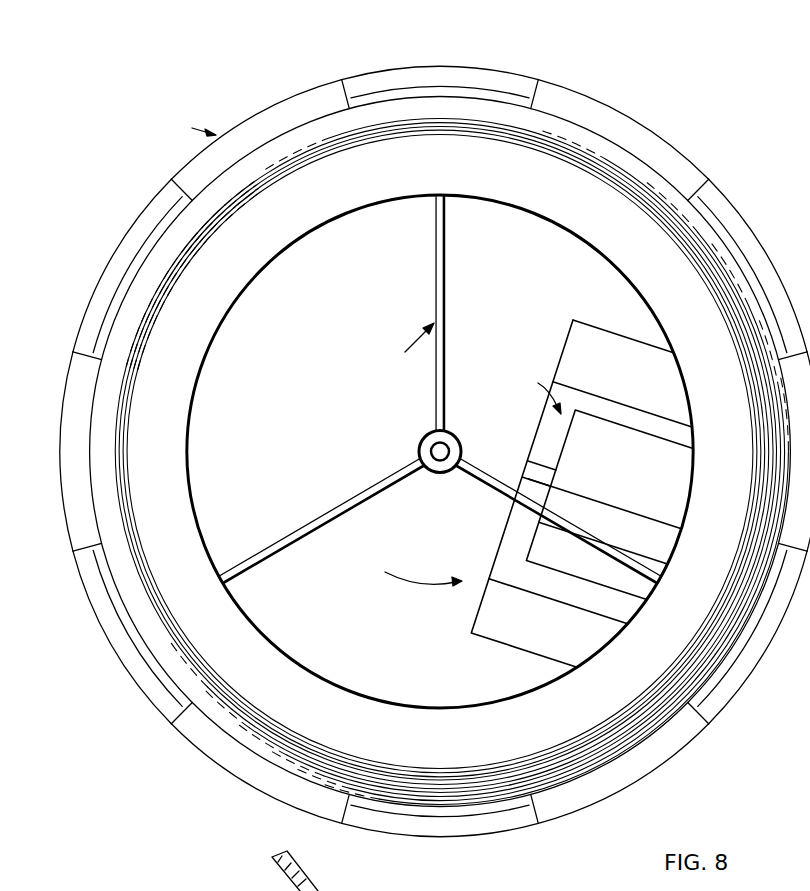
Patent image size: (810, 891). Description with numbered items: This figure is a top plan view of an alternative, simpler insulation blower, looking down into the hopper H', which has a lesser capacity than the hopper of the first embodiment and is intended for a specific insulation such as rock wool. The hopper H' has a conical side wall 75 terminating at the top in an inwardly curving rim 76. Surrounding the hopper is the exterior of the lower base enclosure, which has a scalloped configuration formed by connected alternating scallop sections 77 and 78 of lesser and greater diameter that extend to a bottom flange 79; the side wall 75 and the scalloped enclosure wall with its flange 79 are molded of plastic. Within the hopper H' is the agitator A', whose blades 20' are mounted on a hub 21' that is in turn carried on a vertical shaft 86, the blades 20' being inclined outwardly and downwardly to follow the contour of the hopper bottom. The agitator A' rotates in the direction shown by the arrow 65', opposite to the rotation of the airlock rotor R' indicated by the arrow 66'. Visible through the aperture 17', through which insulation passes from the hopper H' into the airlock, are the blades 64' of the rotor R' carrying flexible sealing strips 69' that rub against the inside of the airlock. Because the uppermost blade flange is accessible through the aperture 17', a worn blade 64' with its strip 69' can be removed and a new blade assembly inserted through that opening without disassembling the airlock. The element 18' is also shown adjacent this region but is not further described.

The bottom flange 79 is at (440, 63).
The scallop section of greater diameter 78 is at (632, 116).
The scallop section of lesser diameter 77 is at (528, 92).
The conical side wall 75 is at (305, 172).
The hopper H' is at (194, 128).
The inwardly curving rim 76 is at (334, 219).
The blades 20' is at (440, 390).
The agitator A' is at (408, 345).
The hub 21' is at (465, 441).
The vertical shaft 86 is at (436, 446).
The aperture 17' is at (622, 362).
The carrier block 18' is at (524, 492).
The flexible sealing strips 69' is at (572, 512).
The arrow 66' is at (609, 504).
The blades 64' is at (634, 538).
The rotor R' is at (537, 390).
The arrow 65' is at (423, 558).